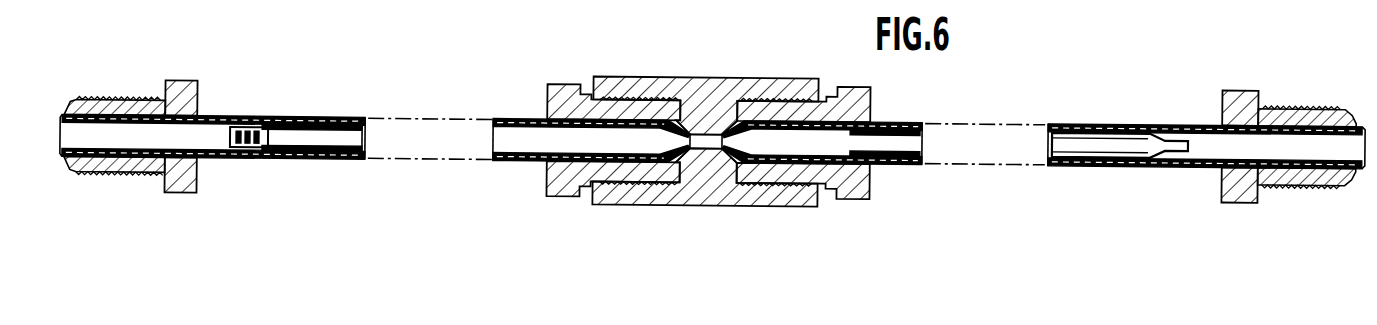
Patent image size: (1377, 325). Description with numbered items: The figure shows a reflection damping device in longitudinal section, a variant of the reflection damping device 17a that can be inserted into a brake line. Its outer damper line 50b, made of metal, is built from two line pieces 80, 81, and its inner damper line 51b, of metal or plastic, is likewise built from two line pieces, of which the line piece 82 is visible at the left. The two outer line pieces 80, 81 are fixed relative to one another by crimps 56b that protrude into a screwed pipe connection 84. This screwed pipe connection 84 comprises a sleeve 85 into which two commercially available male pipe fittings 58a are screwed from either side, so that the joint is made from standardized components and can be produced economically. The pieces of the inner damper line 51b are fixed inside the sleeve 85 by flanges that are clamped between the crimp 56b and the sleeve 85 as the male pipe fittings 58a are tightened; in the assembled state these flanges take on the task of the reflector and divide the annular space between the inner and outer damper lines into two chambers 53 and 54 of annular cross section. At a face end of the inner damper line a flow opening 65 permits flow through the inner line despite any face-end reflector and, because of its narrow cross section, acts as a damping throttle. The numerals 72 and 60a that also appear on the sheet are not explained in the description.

The fluid coupling assembly 17a is at (934, 251).
The tubing 50b is at (356, 117).
The tubing end portion 51b is at (490, 160).
The tube axis 53 is at (376, 119).
The tubing end 54 is at (1042, 133).
The tube end faces 56b is at (742, 122).
The nut 58a is at (182, 191).
The ferrule sleeve 65 is at (282, 150).
The fitting 72 is at (247, 312).
The insert sleeve 80 is at (358, 155).
The insert sleeve 81 is at (892, 166).
The tube end 82 is at (372, 152).
The union body 84 is at (713, 207).
The union body bore 85 is at (667, 90).
The fitting 60a is at (73, 321).